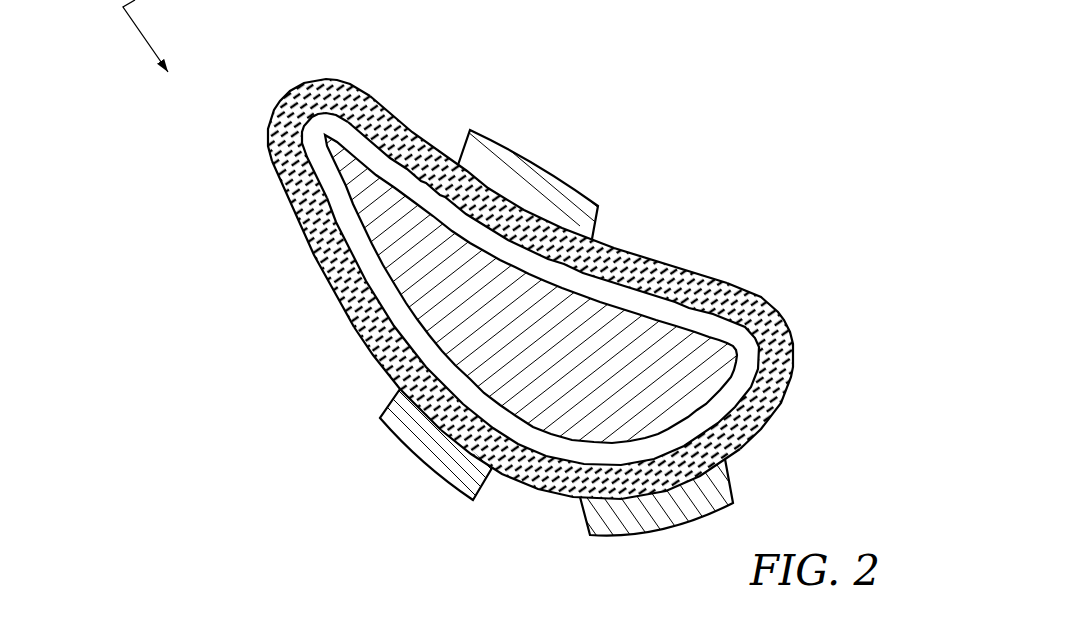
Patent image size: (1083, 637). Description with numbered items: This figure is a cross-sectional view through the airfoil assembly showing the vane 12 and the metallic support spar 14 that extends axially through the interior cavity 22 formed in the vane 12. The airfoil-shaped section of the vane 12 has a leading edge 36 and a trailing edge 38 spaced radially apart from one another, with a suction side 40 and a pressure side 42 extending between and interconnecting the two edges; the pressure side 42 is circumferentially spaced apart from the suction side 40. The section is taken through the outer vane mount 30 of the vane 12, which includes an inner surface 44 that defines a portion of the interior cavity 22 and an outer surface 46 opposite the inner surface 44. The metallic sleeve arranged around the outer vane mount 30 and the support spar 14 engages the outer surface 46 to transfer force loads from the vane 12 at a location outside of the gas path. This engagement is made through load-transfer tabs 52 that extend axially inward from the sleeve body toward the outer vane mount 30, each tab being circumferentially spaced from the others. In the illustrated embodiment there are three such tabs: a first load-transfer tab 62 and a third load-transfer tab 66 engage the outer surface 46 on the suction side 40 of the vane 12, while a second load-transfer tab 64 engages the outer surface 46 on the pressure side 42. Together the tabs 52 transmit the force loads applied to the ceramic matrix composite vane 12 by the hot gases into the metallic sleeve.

The vane 12 is at (240, 268).
The support spar 14 is at (372, 170).
The interior cavity 22 is at (313, 153).
The outer vane mount 30 is at (340, 307).
The leading edge 36 is at (790, 397).
The trailing edge 38 is at (291, 96).
The suction side 40 is at (380, 362).
The pressure side 42 is at (617, 253).
The inner surface 44 is at (383, 300).
The outer surface 46 is at (290, 203).
The load-transfer tabs 52 is at (540, 508).
The first load-transfer tab 62 is at (417, 462).
The second load-transfer tab 64 is at (517, 163).
The third load-transfer tab 66 is at (680, 532).